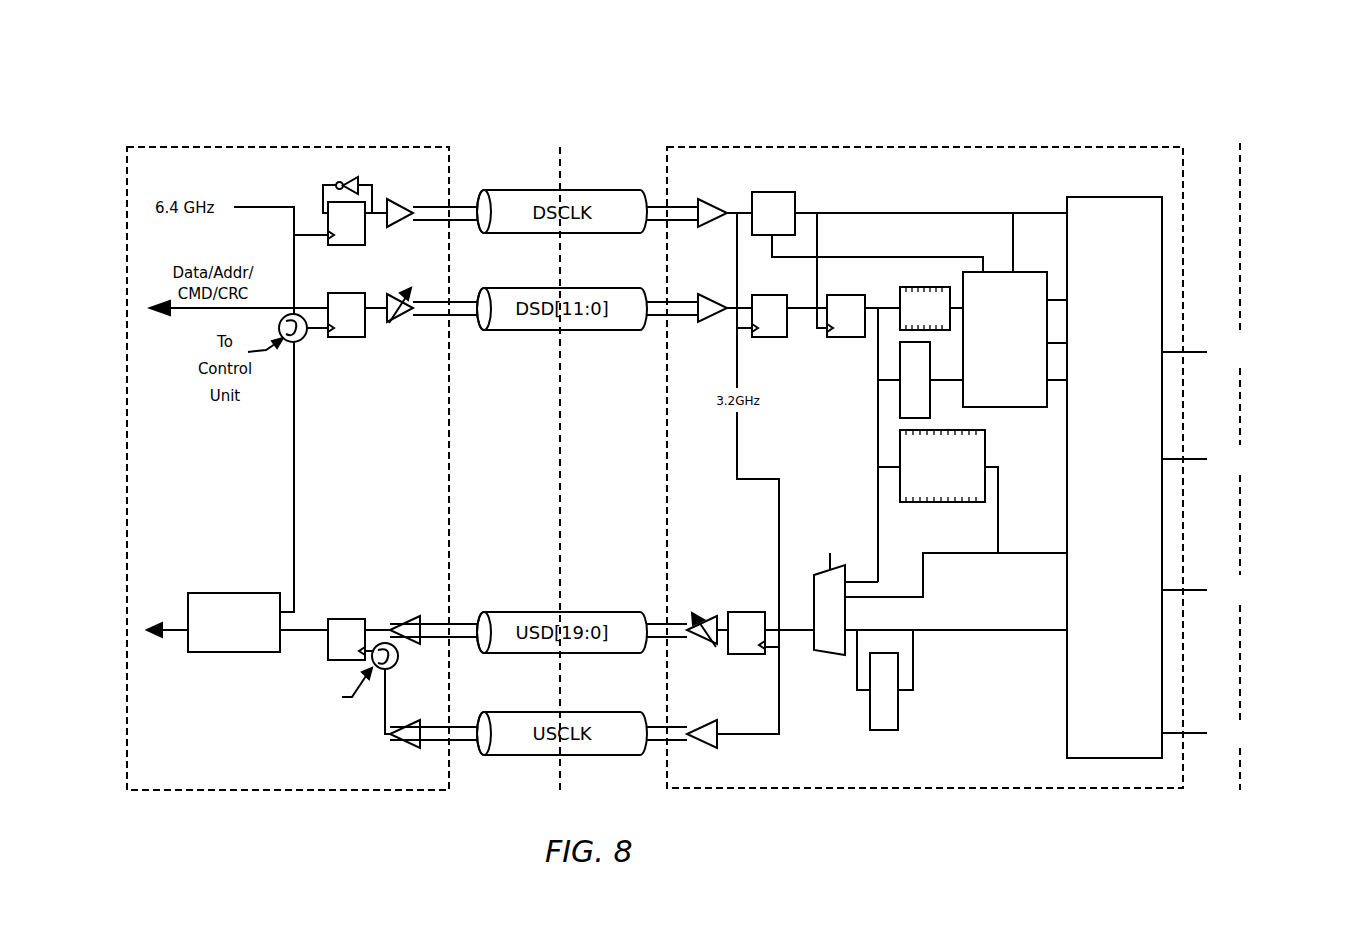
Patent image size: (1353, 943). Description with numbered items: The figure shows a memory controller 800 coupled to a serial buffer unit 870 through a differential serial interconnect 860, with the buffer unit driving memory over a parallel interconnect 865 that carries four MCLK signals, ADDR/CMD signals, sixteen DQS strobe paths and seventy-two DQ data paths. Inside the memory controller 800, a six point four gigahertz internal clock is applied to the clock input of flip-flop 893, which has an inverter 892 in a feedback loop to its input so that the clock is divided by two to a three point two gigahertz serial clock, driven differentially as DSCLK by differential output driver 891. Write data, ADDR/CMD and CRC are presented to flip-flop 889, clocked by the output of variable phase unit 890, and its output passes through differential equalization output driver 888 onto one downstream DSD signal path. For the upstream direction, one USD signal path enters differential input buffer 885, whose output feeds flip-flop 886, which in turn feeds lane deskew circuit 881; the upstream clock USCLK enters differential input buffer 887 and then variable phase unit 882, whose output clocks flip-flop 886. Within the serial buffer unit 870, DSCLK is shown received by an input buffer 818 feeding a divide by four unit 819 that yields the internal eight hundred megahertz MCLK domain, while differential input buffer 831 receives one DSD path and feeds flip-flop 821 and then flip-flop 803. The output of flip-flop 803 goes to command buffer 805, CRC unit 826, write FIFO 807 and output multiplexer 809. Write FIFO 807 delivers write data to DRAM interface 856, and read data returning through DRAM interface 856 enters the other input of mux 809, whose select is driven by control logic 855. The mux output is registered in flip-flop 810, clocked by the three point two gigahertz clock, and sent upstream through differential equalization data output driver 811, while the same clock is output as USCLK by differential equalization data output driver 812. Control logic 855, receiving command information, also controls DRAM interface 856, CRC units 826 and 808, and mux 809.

The memory controller 800 is at (248, 179).
The serial buffer unit 870 is at (1165, 181).
The differential serial interconnect 860 is at (563, 419).
The parallel interconnect 865 is at (1240, 429).
The inverter 892 is at (355, 178).
The differential output driver 891 is at (400, 200).
The flip-flop 893 is at (352, 246).
The flip-flop 889 is at (347, 293).
The differential equalization output driver 888 is at (402, 294).
The variable phase unit 890 is at (300, 342).
The lane deskew circuit 881 is at (228, 653).
The flip-flop 886 is at (347, 619).
The differential input buffer 885 is at (420, 617).
The variable phase unit 882 is at (396, 668).
The differential input buffer 887 is at (406, 749).
The clock receiver 818 is at (705, 198).
The differential input buffer 831 is at (706, 295).
The divide-by-four circuit 819 is at (776, 192).
The flip-flop 821 is at (772, 338).
The flip-flop 803 is at (846, 338).
The command buffer 805 is at (910, 287).
The CRC unit 826 is at (900, 410).
The control logic 855 is at (995, 272).
The write FIFO 807 is at (990, 434).
The output multiplexer 809 is at (836, 656).
The flip-flop 810 is at (745, 612).
The differential equalization data output driver 811 is at (716, 648).
The CRC unit 808 is at (883, 731).
The differential equalization data output driver 812 is at (710, 749).
The DRAM interface 856 is at (1067, 738).